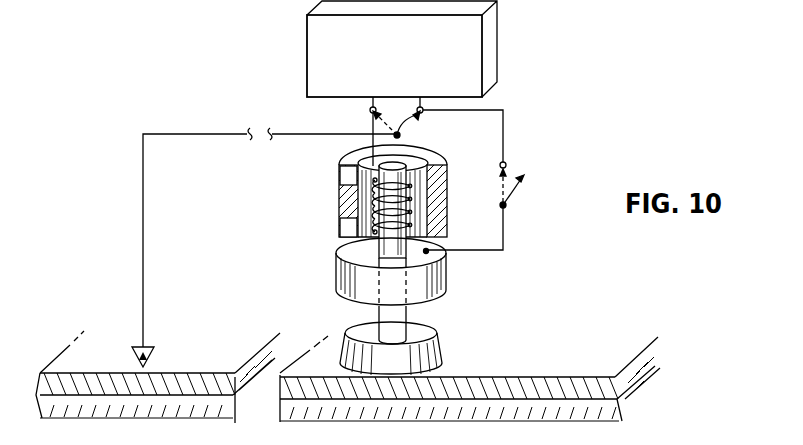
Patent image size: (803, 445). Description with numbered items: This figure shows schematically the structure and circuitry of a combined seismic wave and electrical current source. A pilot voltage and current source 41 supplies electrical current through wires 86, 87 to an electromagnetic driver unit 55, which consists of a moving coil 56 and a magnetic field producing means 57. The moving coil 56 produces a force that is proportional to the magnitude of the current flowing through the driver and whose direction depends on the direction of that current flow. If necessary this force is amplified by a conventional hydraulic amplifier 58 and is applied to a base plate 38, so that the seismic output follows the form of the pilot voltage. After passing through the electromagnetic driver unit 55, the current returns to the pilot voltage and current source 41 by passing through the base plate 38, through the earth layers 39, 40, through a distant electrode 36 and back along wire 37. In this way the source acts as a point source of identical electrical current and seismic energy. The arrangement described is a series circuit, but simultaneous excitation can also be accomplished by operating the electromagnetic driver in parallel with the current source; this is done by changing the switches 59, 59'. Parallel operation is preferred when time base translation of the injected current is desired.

The pilot voltage and current source 41 is at (493, 37).
The wire 87 is at (372, 98).
The wire 86 is at (512, 108).
The switch 59' is at (419, 128).
The wire 37 is at (143, 210).
The distant electrode 36 is at (153, 348).
The switch 59 is at (493, 208).
The electromagnetic driver unit 55 is at (339, 200).
The magnetic field producing means 57 is at (340, 160).
The moving coil 56 is at (410, 200).
The hydraulic amplifier 58 is at (336, 277).
The base plate 38 is at (428, 347).
The earth layer 39 is at (282, 388).
The earth layer 40 is at (283, 410).